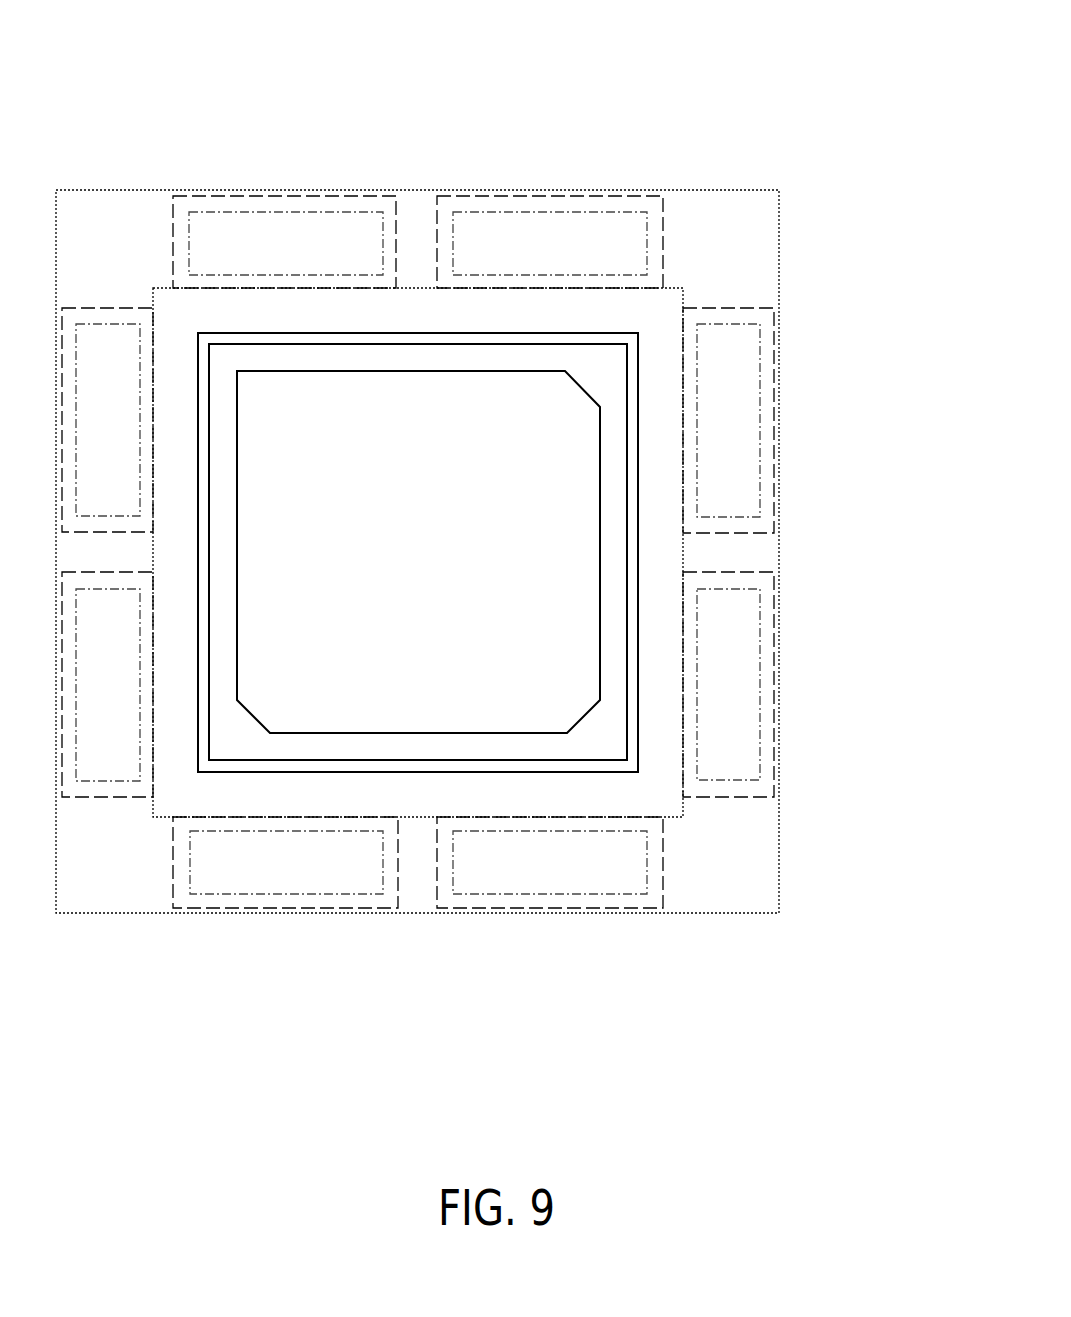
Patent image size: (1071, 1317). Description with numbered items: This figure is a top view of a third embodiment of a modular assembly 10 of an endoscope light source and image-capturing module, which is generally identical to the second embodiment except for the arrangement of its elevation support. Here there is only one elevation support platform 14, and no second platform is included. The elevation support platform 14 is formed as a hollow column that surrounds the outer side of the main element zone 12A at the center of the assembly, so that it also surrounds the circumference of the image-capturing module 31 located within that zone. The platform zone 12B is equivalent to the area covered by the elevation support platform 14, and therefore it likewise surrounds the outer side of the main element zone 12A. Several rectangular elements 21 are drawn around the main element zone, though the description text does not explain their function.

The modular assembly 10 is at (486, 458).
The main element zone 12A is at (662, 302).
The platform zone 12B is at (779, 873).
The elevation support platform 14 is at (486, 551).
The conductive pads 21 is at (760, 398).
The image-capturing module 31 is at (415, 333).